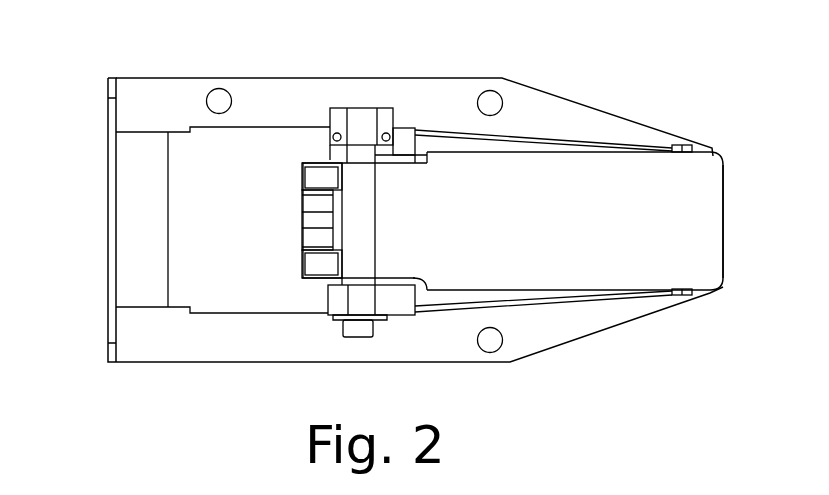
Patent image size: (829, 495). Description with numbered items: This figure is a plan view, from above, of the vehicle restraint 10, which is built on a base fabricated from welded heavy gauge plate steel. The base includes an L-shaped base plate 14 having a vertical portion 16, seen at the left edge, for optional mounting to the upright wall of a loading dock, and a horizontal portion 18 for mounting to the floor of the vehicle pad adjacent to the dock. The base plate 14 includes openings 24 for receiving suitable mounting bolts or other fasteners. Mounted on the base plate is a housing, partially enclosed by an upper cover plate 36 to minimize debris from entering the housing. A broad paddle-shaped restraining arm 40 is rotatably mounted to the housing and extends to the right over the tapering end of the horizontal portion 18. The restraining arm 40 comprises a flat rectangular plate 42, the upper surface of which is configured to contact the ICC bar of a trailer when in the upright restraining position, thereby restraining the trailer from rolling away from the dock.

The restraint 10 is at (245, 55).
The L-shaped base plate 14 is at (620, 313).
The vertical portion 16 is at (105, 118).
The horizontal portion 18 is at (437, 93).
The openings 24 is at (490, 339).
The upper cover plate 36 is at (262, 242).
The restraining arm 40 is at (708, 204).
The flat rectangular plate 42 is at (567, 242).